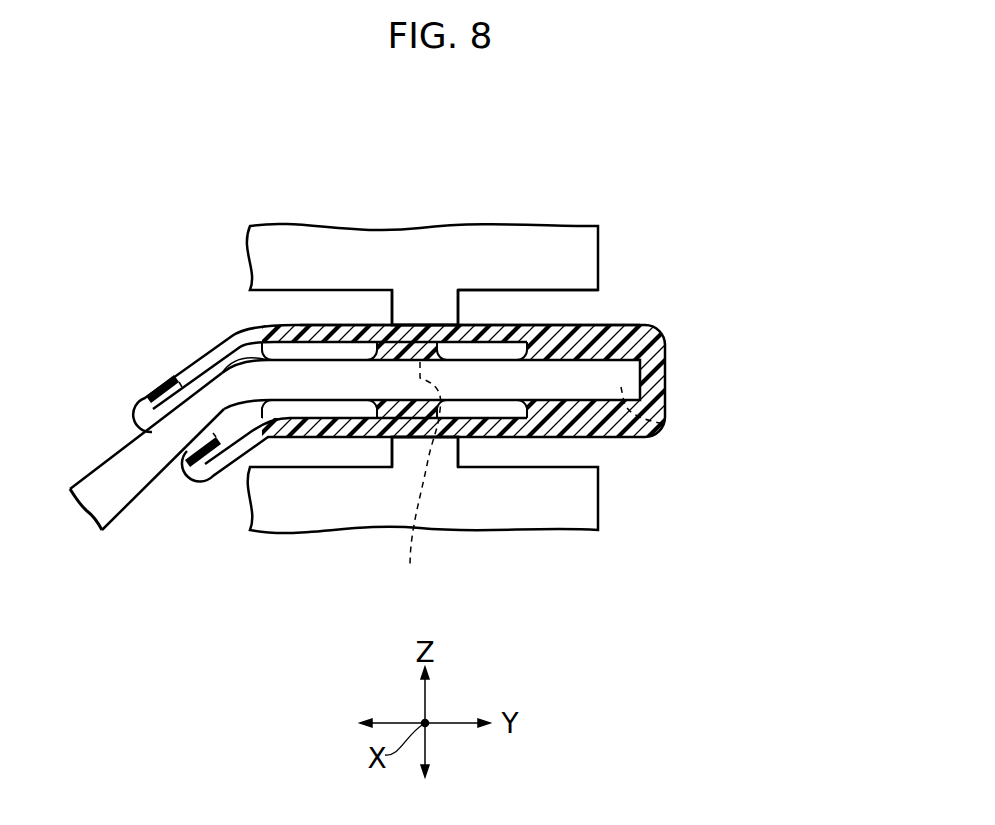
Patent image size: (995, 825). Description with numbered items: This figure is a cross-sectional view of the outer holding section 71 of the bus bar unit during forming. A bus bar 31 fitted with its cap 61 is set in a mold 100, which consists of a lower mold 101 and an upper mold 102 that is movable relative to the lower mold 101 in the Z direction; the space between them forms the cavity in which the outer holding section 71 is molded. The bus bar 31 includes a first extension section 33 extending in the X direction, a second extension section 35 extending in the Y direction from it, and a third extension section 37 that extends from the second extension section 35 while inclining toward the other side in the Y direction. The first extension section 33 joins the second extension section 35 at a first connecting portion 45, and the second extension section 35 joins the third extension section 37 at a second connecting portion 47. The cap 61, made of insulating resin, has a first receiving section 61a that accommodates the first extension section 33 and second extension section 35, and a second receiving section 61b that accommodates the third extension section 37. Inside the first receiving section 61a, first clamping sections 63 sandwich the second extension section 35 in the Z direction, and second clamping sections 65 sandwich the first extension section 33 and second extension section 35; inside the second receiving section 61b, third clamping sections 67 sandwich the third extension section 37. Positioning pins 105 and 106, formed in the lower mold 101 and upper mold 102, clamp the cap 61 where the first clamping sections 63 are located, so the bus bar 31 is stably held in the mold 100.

The mold 100 is at (498, 373).
The upper mold 102 is at (578, 262).
The lower mold 101 is at (565, 510).
The positioning pin 106 is at (452, 308).
The positioning pin 105 is at (448, 445).
The outer holding section 71 is at (573, 311).
The cap 61 is at (460, 350).
The first receiving section 61a is at (507, 323).
The second receiving section 61b is at (180, 372).
The first clamping section 63 is at (422, 347).
The second clamping section 65 is at (593, 353).
The third clamping section 67 is at (167, 405).
The second extension section 35 is at (328, 378).
The second connecting portion 47 is at (243, 392).
The third extension section 37 is at (120, 470).
The bus bar 31 is at (343, 386).
The first extension section 33 is at (660, 423).
The first connecting portion 45 is at (419, 478).